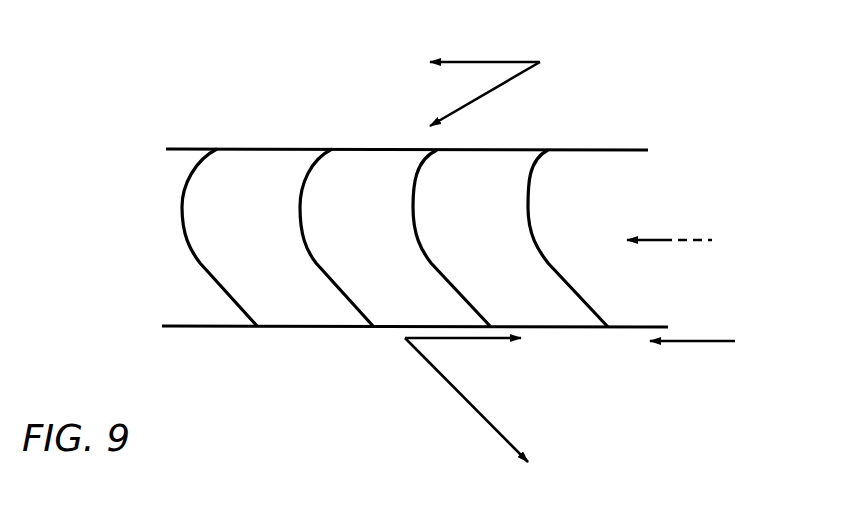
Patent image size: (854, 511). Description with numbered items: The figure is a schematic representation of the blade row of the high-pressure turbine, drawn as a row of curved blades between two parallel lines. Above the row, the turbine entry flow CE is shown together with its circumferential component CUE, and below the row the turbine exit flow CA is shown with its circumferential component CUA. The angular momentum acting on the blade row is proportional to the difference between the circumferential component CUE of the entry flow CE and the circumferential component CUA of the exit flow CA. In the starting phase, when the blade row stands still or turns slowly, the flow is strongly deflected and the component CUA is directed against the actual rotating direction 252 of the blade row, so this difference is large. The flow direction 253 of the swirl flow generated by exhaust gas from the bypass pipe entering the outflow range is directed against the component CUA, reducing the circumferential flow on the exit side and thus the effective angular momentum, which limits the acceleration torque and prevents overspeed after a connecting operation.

The rotating direction 252 is at (670, 240).
The flow direction of the swirl flow 253 is at (688, 341).
The circumferential component of the turbine entry flow CUE is at (466, 60).
The turbine entry flow CE is at (493, 93).
The circumferential component of the turbine exit flow CUA is at (463, 338).
The turbine exit flow CA is at (470, 408).